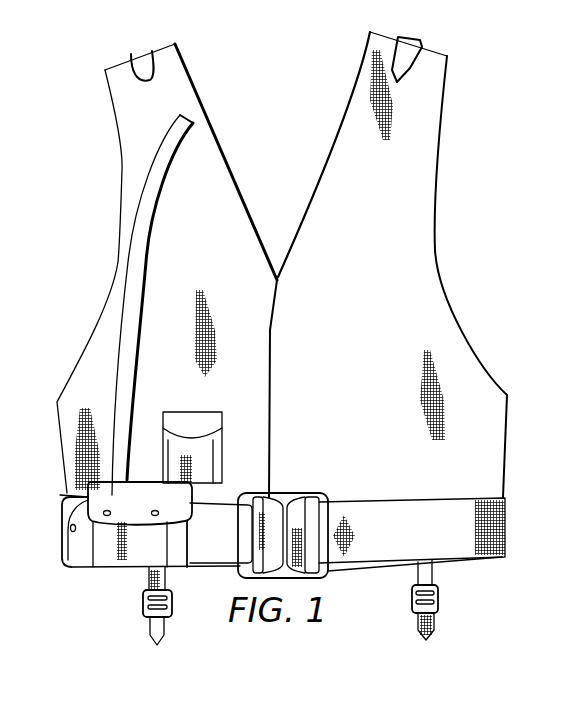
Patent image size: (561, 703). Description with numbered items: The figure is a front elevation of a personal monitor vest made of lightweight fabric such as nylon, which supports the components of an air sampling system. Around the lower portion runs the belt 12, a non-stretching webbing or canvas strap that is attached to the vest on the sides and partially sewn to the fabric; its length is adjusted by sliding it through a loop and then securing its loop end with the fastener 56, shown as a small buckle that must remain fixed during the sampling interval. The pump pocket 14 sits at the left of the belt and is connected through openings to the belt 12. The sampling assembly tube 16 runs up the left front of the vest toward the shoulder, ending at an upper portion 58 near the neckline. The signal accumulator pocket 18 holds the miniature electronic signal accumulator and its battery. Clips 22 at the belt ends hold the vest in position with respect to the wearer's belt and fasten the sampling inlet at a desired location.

The belt 12 is at (410, 517).
The pump pocket 14 is at (132, 550).
The sampling assembly tube 16 is at (147, 233).
The signal accumulator pocket 18 is at (203, 458).
The clips 22 is at (150, 638).
The fastener 56 is at (287, 503).
The zipper top 58 is at (184, 116).